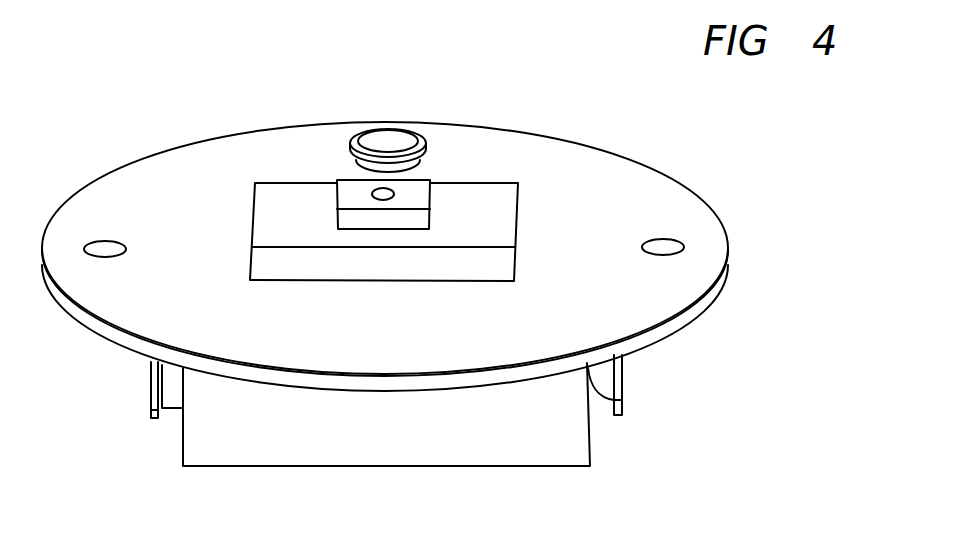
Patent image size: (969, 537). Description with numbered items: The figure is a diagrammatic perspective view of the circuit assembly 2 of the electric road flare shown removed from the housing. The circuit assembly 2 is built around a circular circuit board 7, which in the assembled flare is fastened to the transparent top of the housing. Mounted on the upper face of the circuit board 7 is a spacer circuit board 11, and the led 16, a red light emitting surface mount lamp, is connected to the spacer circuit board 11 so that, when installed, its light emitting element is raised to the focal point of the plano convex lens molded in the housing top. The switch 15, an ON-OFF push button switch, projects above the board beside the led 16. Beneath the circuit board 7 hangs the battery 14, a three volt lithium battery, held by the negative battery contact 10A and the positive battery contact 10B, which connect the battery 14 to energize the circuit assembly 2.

The circuit assembly 2 is at (148, 191).
The circuit board 7 is at (528, 150).
The spacer circuit board 11 is at (278, 208).
The led 16 is at (346, 187).
The switch 15 is at (388, 143).
The battery 14 is at (249, 428).
The negative battery contact 10A is at (623, 415).
The positive battery contact 10B is at (152, 415).